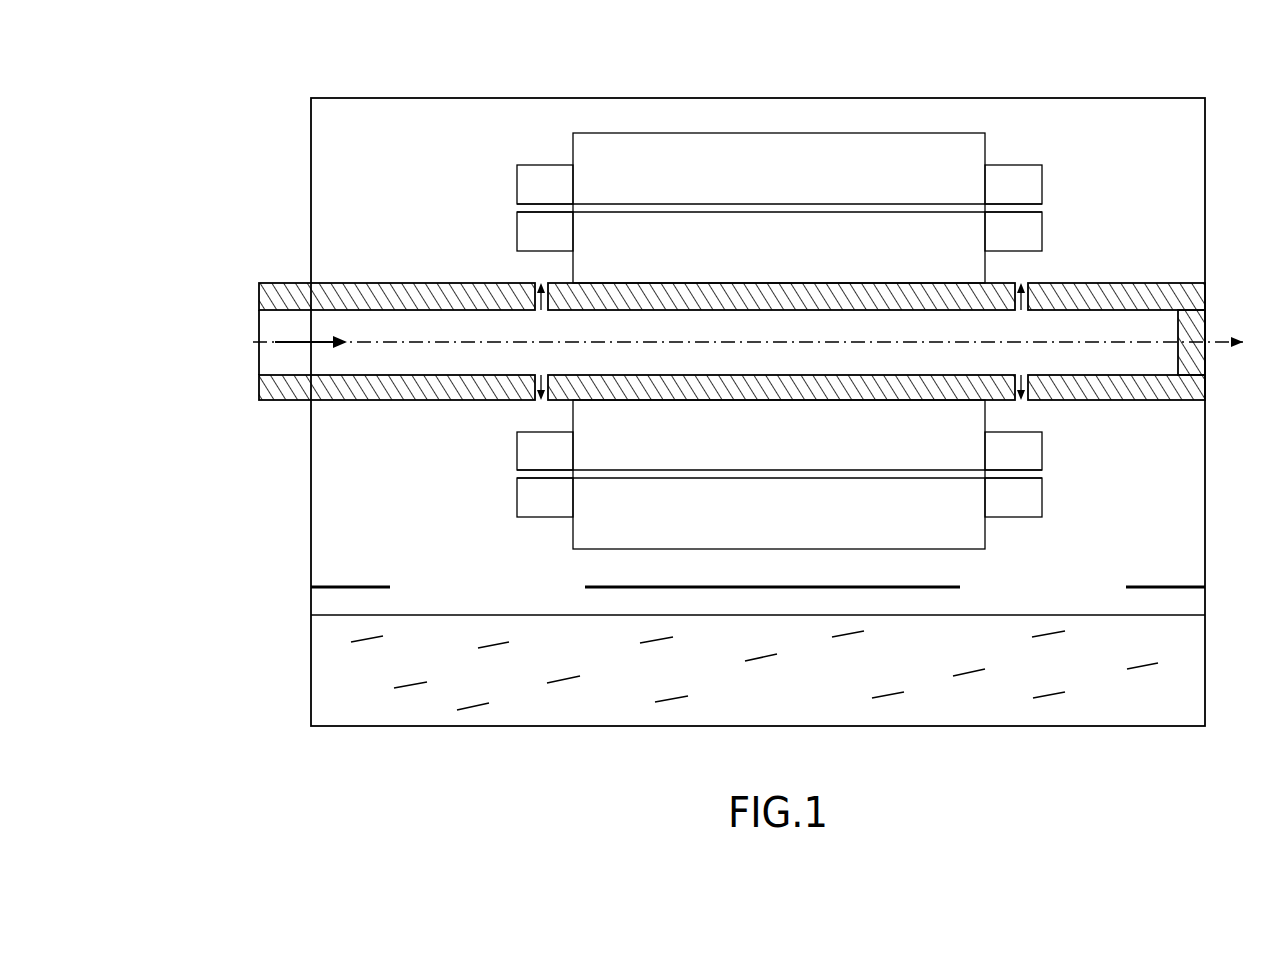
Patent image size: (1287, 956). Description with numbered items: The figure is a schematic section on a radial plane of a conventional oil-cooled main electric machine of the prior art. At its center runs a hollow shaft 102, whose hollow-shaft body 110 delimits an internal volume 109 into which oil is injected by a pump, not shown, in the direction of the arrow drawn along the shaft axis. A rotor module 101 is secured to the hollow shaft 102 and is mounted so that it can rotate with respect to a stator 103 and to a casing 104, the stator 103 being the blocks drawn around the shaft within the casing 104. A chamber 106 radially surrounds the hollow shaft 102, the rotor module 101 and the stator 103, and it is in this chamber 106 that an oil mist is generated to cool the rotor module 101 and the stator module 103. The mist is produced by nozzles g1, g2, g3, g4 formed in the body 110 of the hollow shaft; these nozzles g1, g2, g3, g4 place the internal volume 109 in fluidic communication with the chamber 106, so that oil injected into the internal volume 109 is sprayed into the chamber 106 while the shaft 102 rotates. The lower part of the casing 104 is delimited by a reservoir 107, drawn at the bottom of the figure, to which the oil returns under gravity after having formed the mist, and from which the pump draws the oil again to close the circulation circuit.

The rotor module 101 is at (779, 295).
The hollow shaft 102 is at (702, 313).
The stator 103 is at (602, 148).
The casing 104 is at (333, 98).
The chamber 106 is at (340, 141).
The reservoir 107 is at (346, 615).
The internal volume 109 is at (293, 360).
The hollow-shaft body 110 is at (353, 283).
The nozzle g1 is at (538, 278).
The nozzle g2 is at (536, 405).
The nozzle g3 is at (1028, 280).
The nozzle g4 is at (1028, 405).